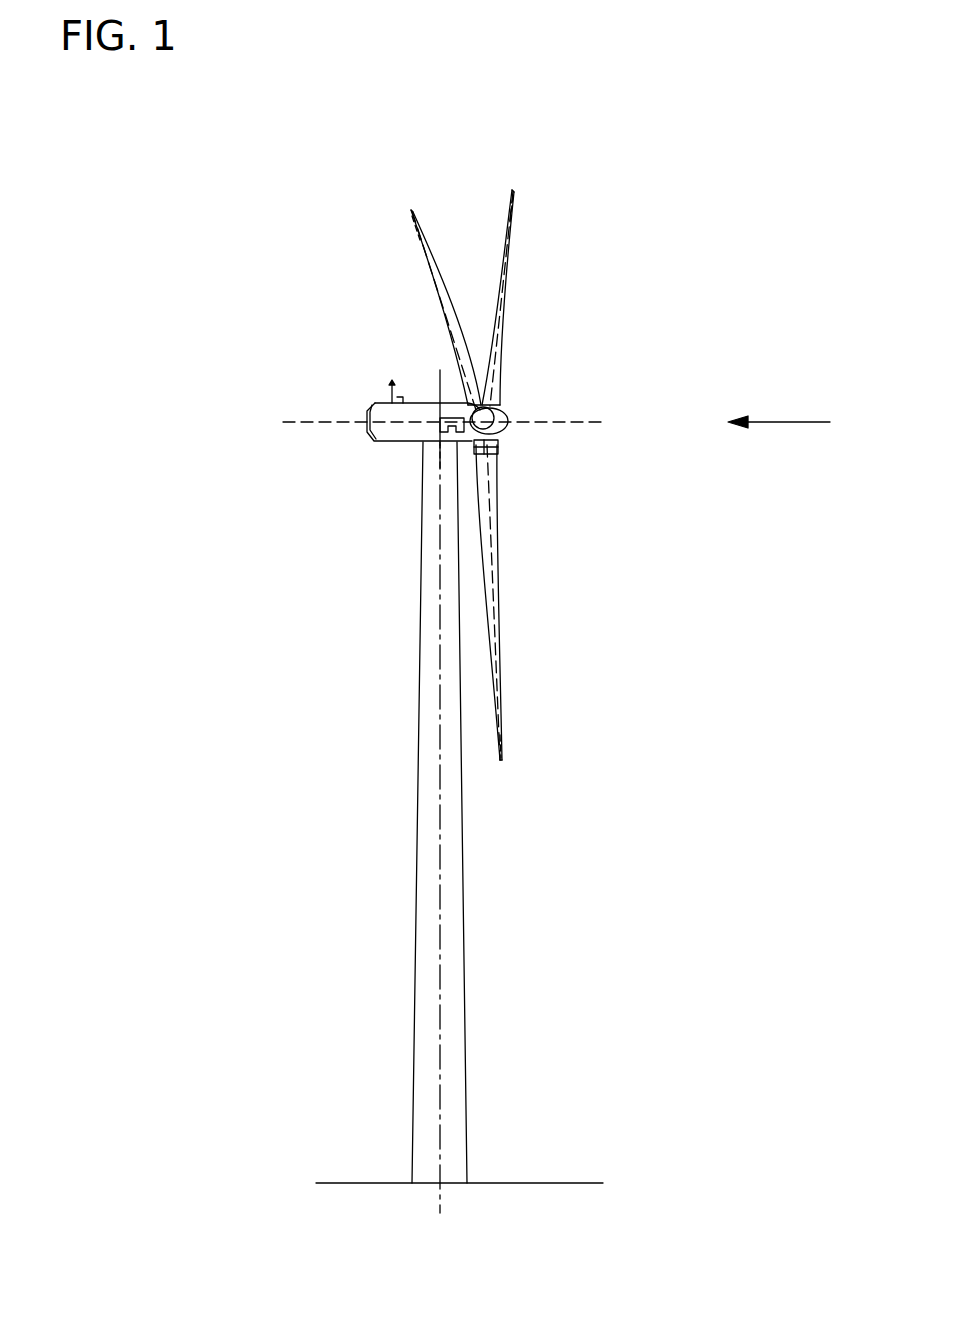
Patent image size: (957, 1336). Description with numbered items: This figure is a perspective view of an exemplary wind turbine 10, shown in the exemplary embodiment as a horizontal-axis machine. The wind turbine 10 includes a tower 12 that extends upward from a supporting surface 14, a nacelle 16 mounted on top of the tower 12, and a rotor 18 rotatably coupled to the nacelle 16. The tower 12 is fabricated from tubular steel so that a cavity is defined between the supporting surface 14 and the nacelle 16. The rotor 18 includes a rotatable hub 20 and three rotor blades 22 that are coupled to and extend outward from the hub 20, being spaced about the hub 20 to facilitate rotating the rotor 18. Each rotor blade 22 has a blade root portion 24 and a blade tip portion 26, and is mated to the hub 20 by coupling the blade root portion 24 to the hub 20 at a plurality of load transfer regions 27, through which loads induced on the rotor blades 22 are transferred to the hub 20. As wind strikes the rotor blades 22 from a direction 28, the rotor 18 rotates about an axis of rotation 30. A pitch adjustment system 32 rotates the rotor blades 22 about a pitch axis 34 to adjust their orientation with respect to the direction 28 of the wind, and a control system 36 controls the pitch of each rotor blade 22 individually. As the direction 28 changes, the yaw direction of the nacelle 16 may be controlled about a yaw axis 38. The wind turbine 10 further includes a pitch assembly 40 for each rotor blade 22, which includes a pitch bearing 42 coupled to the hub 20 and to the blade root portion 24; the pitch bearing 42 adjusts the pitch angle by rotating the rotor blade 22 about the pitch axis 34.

The wind turbine 10 is at (208, 222).
The tower 12 is at (416, 962).
The supporting surface 14 is at (372, 1183).
The nacelle 16 is at (398, 442).
The rotor 18 is at (510, 331).
The rotatable hub 20 is at (500, 420).
The rotor blade 22 is at (433, 272).
The blade root portion 24 is at (498, 381).
The blade tip portion 26 is at (411, 210).
The load transfer region 27 is at (494, 446).
The direction 28 is at (797, 422).
The axis of rotation 30 is at (565, 422).
The pitch adjustment system 32 is at (483, 470).
The pitch axis 34 is at (407, 215).
The control system 36 is at (440, 470).
The yaw axis 38 is at (440, 903).
The pitch assembly 40 is at (497, 440).
The pitch bearing 42 is at (490, 443).